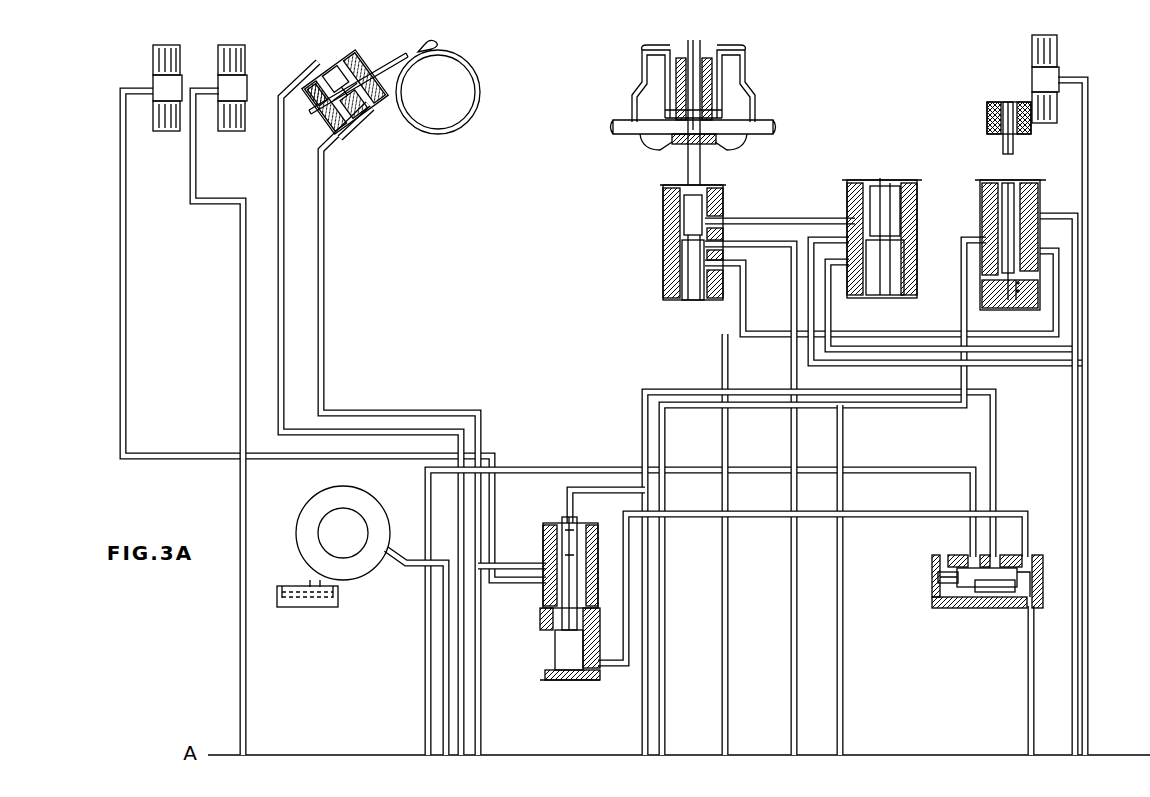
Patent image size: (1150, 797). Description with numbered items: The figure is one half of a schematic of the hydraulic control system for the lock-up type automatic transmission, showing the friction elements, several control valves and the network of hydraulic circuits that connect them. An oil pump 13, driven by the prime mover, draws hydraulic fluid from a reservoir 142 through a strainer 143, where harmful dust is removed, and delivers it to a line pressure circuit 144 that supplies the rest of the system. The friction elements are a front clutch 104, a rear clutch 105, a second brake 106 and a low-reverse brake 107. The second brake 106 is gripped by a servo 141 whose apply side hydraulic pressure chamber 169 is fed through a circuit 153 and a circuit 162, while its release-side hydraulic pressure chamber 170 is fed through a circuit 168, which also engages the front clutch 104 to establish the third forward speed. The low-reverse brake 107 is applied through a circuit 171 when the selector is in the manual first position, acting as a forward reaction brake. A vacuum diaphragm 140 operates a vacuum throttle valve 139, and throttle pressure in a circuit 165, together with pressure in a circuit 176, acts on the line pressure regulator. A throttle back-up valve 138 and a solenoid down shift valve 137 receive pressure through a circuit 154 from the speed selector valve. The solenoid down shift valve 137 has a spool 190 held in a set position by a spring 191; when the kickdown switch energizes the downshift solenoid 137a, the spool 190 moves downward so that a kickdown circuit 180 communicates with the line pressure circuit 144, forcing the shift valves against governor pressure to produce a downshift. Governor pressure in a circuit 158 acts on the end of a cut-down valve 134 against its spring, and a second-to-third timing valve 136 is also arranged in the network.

The oil pump 13 is at (320, 492).
The front clutch 104 is at (146, 72).
The rear clutch 105 is at (217, 44).
The second brake 106 is at (485, 62).
The low-reverse brake 107 is at (1067, 71).
The cut-down valve 134 is at (1038, 542).
The 2-3 timing valve 136 is at (539, 663).
The solenoid down shift valve 137 is at (1034, 225).
The downshift solenoid 137a is at (987, 108).
The throttle back-up valve 138 is at (898, 176).
The vacuum throttle valve 139 is at (728, 183).
The vacuum diaphragm 140 is at (764, 88).
The servo 141 is at (337, 72).
The reservoir 142 is at (315, 608).
The strainer 143 is at (300, 584).
The line pressure circuit 144 is at (420, 566).
The circuit 153 is at (240, 318).
The circuit 154 is at (1058, 214).
The circuit 158 is at (1028, 725).
The circuit 162 is at (279, 160).
The circuit 165 is at (792, 367).
The circuit 168 is at (126, 160).
The apply side hydraulic pressure chamber 169 is at (318, 80).
The release-side hydraulic pressure chamber 170 is at (372, 114).
The circuit 171 is at (1088, 203).
The circuit 176 is at (514, 472).
The kickdown circuit 180 is at (962, 318).
The spool 190 is at (983, 216).
The spring 191 is at (1022, 290).